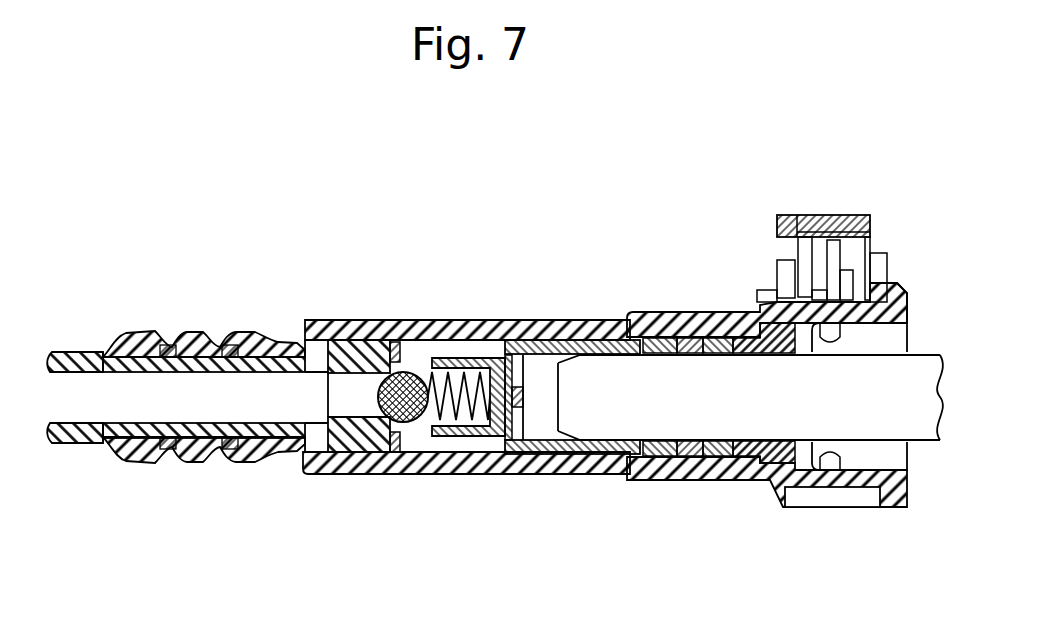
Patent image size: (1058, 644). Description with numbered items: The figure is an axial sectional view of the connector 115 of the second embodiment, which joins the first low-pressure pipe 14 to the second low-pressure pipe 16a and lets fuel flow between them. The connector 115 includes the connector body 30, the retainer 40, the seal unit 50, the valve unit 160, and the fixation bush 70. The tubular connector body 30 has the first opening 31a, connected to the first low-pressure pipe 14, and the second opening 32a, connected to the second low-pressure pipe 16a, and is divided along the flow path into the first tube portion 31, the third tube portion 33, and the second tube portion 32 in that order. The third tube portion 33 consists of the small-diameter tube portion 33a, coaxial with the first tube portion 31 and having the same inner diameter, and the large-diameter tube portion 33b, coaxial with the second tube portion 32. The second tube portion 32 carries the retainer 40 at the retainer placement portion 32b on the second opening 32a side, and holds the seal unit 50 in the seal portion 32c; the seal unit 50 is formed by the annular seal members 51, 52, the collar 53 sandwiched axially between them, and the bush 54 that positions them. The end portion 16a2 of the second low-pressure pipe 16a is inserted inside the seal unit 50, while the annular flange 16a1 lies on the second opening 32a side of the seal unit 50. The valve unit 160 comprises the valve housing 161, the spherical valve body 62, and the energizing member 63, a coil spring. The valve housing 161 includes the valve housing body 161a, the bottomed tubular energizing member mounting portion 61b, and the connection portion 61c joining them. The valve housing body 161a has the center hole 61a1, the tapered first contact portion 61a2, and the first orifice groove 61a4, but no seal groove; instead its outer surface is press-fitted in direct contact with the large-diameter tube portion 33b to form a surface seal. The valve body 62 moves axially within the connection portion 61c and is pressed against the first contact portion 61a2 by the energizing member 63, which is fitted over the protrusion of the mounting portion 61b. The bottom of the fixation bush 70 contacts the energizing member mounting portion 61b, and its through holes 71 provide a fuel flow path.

The first low-pressure pipe 14 is at (75, 437).
The second low-pressure pipe 16a is at (755, 457).
The annular flange 16a1 is at (830, 454).
The end portion 16a2 is at (617, 442).
The connector body 30 is at (362, 305).
The first tube portion 31 is at (191, 371).
The first opening 31a is at (106, 376).
The second tube portion 32 is at (793, 355).
The second opening 32a is at (902, 324).
The retainer placement portion 32b is at (850, 313).
The seal portion 32c is at (680, 320).
The third tube portion 33 is at (246, 320).
The small-diameter tube portion 33a is at (300, 360).
The large-diameter tube portion 33b is at (333, 332).
The retainer 40 is at (811, 224).
The seal unit 50 is at (707, 461).
The annular seal member 51 is at (660, 452).
The annular seal member 52 is at (713, 452).
The collar 53 is at (690, 452).
The bush 54 is at (764, 440).
The center hole 61a1 is at (330, 412).
The first contact portion 61a2 is at (405, 372).
The first orifice groove 61a4 is at (403, 359).
The energizing member mounting portion 61b is at (490, 437).
The connection portion 61c is at (428, 428).
The valve body 62 is at (410, 421).
The energizing member 63 is at (457, 421).
The fixation bush 70 is at (612, 340).
The through hole 71 is at (511, 356).
The connector 115 is at (860, 184).
The valve unit 160 is at (380, 376).
The valve housing 161 is at (347, 440).
The valve housing body 161a is at (370, 440).